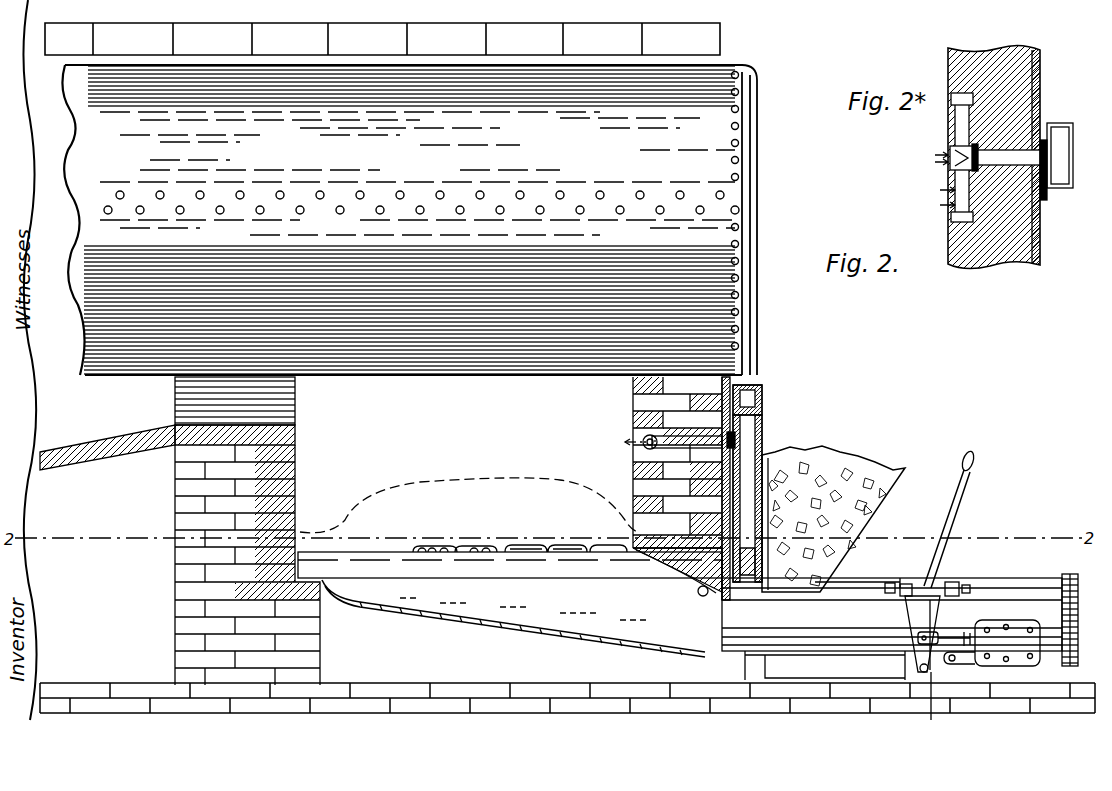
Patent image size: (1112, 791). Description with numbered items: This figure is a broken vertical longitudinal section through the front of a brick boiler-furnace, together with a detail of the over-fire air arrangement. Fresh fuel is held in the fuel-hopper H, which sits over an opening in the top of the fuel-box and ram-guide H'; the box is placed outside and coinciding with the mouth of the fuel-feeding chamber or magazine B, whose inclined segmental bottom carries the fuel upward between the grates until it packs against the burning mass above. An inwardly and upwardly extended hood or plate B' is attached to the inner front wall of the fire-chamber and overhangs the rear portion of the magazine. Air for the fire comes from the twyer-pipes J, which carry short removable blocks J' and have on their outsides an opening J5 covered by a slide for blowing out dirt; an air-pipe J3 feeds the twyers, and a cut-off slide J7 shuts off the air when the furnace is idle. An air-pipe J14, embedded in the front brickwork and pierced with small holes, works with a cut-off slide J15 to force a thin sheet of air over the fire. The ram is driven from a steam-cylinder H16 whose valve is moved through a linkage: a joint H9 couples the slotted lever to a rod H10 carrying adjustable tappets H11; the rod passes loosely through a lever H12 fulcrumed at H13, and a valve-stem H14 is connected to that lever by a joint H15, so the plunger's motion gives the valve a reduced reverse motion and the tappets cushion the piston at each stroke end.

In FIG. 2, the twyer-pipe J is at (510, 552).
In FIG. 2, the block J' is at (520, 533).
In FIG. 2, the air-pipe J3 is at (745, 452).
The opening J5 is at (1062, 160).
In FIG. 2, the cut-off slide J7 is at (762, 405).
In FIG. 2, the air-pipe J14 is at (657, 440).
The air-pipe J14 is at (963, 118).
In FIG. 2, the cut-off slide J15 is at (735, 440).
The cut-off slide J15 is at (1045, 200).
In FIG. 2, the fuel-feeding chamber or magazine B is at (513, 618).
In FIG. 2, the hood or plate B' is at (677, 576).
In FIG. 2, the fuel-hopper H is at (833, 517).
In FIG. 2, the fuel-box and ram-guide H' is at (892, 629).
In FIG. 2, the joint H9 is at (888, 594).
In FIG. 2, the rod H10 is at (940, 588).
In FIG. 2, the tappet H11 is at (985, 566).
In FIG. 2, the lever H12 is at (922, 585).
In FIG. 2, the fulcrum H13 is at (919, 668).
In FIG. 2, the valve-stem H14 is at (931, 706).
In FIG. 2, the joint H15 is at (922, 636).
In FIG. 2, the steam-cylinder H16 is at (1035, 600).